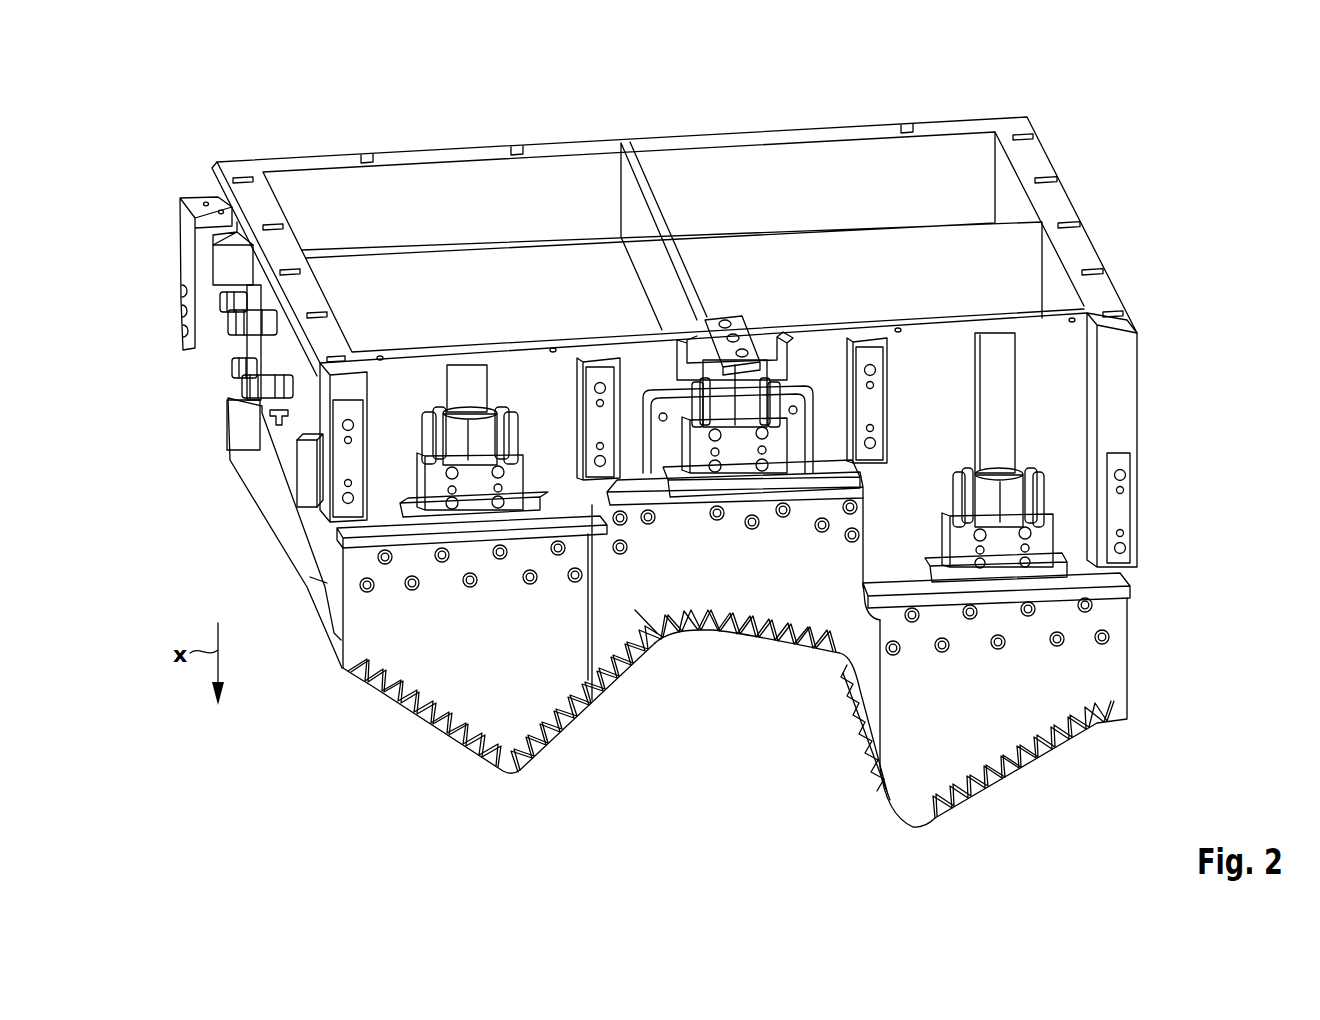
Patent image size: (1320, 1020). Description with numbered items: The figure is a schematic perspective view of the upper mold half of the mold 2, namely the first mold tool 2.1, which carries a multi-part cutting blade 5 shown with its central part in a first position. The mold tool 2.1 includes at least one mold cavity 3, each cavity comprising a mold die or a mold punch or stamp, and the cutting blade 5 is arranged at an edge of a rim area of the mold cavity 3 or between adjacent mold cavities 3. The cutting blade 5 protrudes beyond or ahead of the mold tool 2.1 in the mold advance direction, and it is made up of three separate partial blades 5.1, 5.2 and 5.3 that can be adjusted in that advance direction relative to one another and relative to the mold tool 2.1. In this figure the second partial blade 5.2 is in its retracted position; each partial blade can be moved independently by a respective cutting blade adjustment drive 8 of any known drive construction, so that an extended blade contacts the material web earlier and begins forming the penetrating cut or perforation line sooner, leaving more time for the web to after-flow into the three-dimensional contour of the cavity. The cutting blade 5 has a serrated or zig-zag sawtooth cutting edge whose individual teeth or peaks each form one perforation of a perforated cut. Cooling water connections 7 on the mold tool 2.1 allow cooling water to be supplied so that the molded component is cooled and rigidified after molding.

The mold 2 is at (1143, 98).
The mold tool 2.1 is at (1173, 188).
The mold cavity 3 is at (754, 745).
The cutting blade 5 is at (966, 804).
The first partial blade 5.1 is at (470, 695).
The second partial blade 5.2 is at (657, 647).
The third partial blade 5.3 is at (1027, 690).
The cooling water connections 7 is at (237, 388).
The cutting blade adjustment drive 8 is at (737, 400).